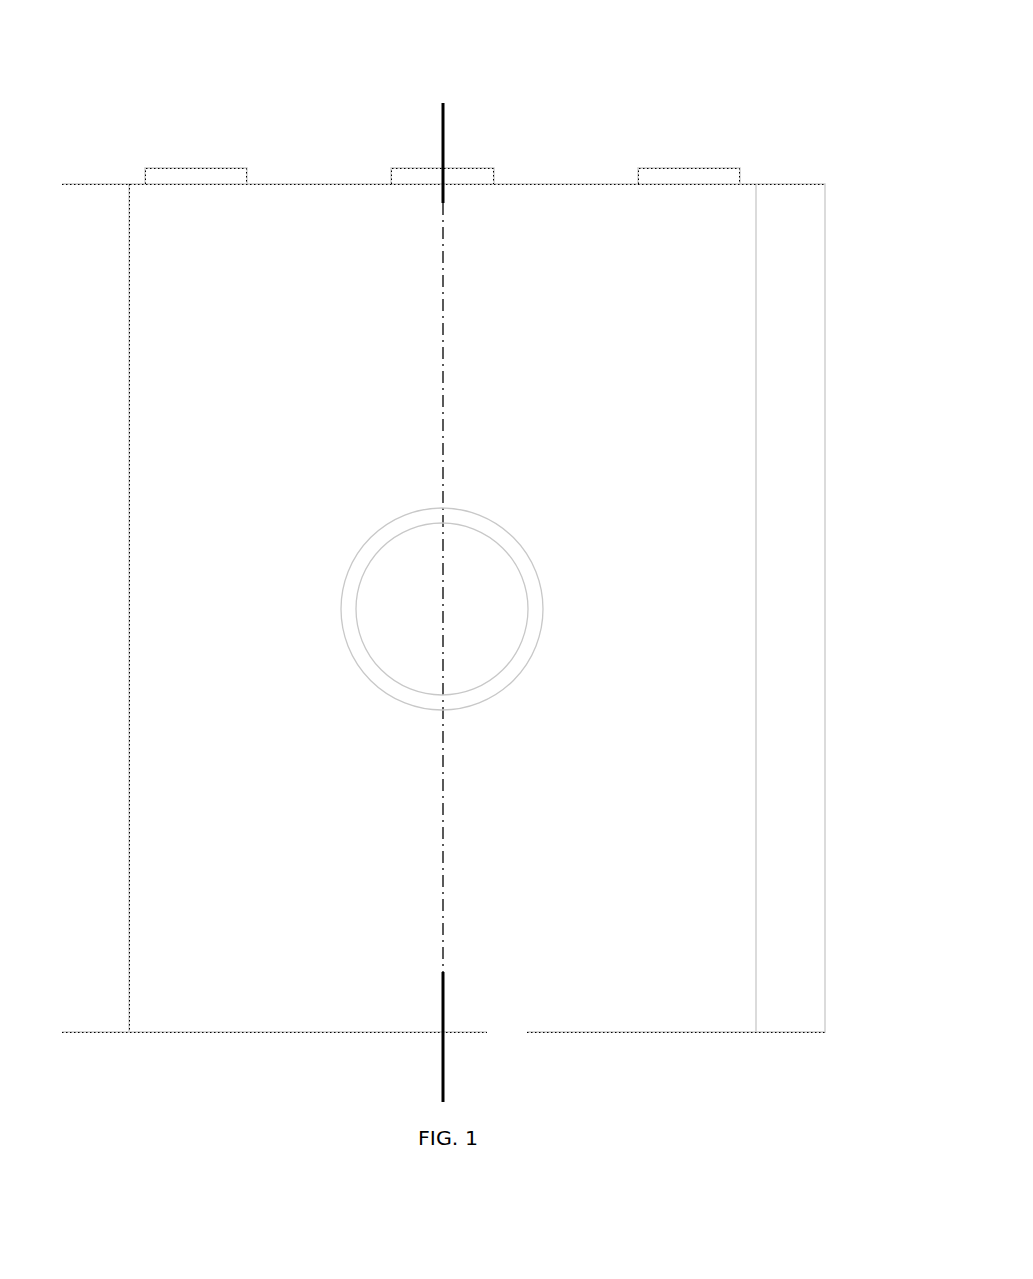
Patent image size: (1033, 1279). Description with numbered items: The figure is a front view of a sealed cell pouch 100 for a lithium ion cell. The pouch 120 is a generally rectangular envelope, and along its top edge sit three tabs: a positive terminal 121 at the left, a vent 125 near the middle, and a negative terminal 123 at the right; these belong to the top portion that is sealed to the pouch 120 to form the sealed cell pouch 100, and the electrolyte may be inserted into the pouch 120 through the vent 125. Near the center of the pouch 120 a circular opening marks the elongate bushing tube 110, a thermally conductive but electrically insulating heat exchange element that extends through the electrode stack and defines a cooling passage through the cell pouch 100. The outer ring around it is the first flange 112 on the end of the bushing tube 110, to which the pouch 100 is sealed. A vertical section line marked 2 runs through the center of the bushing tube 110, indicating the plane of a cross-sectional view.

The sealed cell pouch 100 is at (639, 74).
The bushing tube 110 is at (443, 523).
The first flange 112 is at (545, 607).
The pouch 120 is at (536, 182).
The positive terminal 121 is at (197, 168).
The negative terminal 123 is at (688, 168).
The vent 125 is at (495, 168).
The section line 2- 2 is at (487, 153).